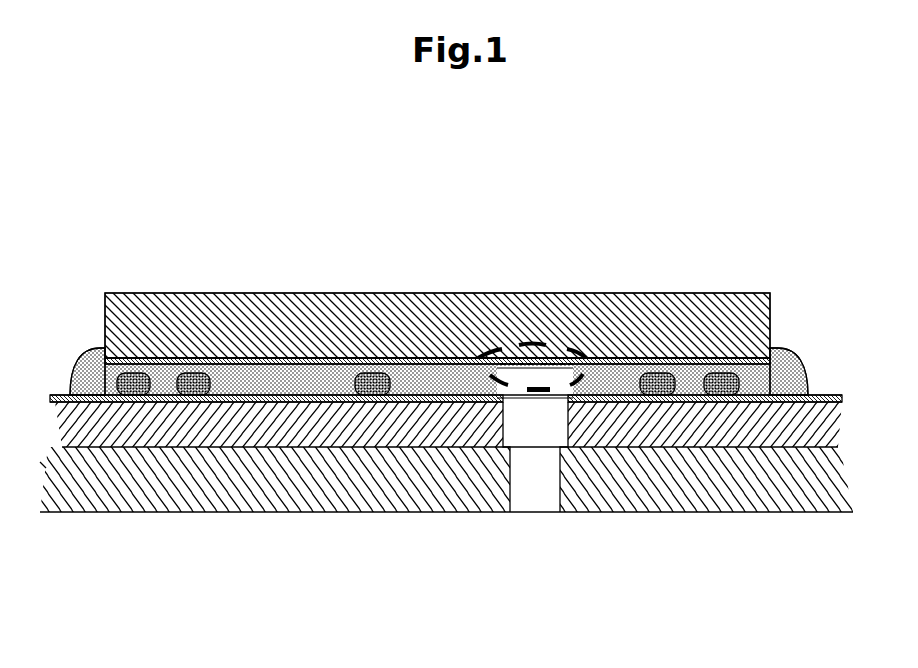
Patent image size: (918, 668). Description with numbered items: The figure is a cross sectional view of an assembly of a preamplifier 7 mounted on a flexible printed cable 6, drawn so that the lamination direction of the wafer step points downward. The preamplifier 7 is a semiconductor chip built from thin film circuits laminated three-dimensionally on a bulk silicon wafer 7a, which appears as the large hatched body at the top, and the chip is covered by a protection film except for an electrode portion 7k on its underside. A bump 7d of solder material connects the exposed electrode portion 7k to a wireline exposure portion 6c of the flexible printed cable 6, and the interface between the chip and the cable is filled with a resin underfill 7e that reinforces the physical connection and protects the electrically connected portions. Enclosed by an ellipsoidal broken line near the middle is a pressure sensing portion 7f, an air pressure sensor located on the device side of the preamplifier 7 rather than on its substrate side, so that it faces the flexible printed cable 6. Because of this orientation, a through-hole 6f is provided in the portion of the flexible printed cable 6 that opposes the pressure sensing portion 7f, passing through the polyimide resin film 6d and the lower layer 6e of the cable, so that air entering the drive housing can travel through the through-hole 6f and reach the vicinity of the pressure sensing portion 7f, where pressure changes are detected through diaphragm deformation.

The preamplifier 7 is at (441, 292).
The bulk silicon wafer 7a is at (245, 310).
The electrode portion 7k is at (140, 361).
The bump 7d is at (728, 372).
The resin underfill 7e is at (790, 360).
The pressure sensing portion 7f is at (541, 343).
The flexible printed cable 6 is at (446, 510).
The wireline exposure portion 6c is at (98, 400).
The polyimide resin film 6d is at (203, 420).
The bottom plate 6e is at (270, 488).
The through-hole 6f is at (540, 487).